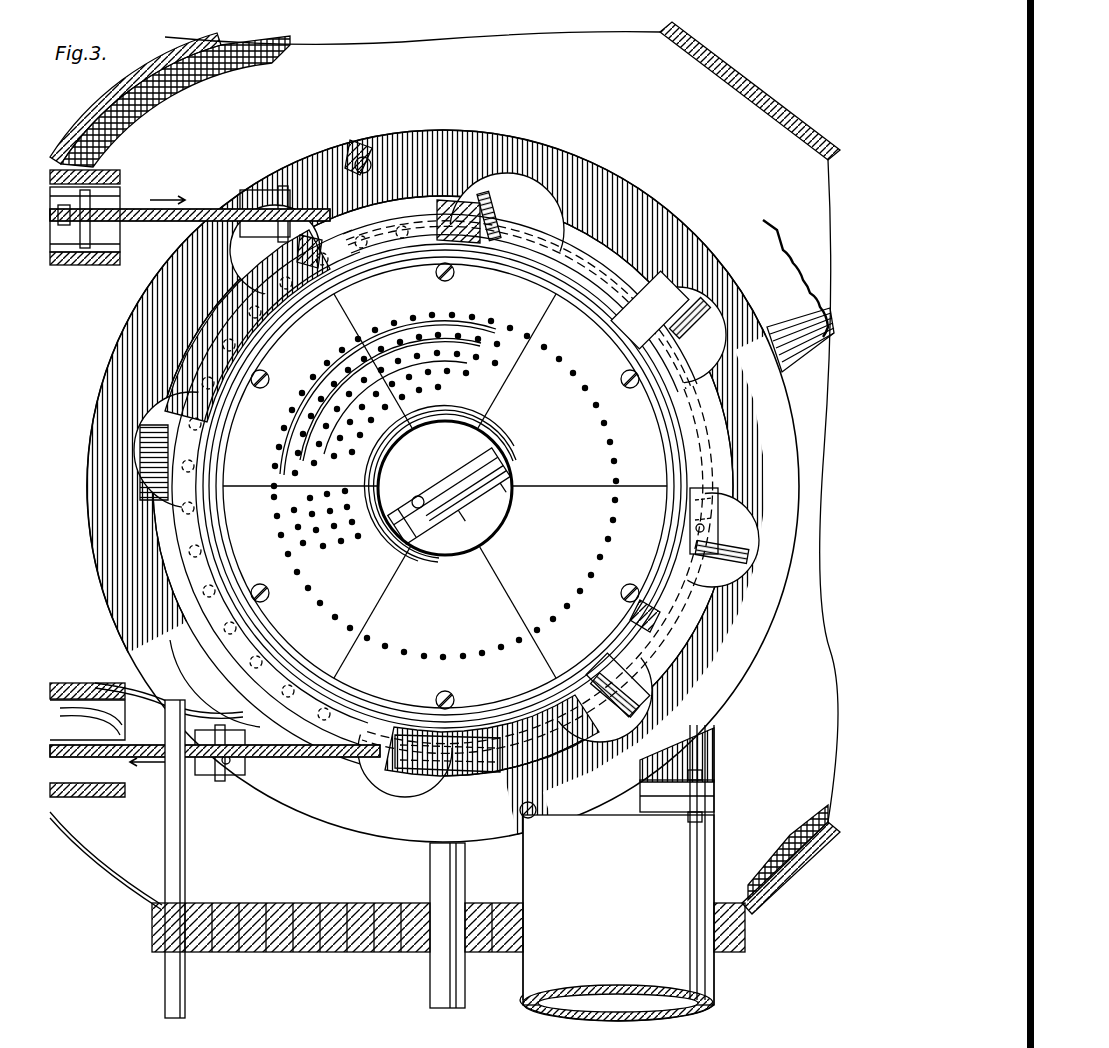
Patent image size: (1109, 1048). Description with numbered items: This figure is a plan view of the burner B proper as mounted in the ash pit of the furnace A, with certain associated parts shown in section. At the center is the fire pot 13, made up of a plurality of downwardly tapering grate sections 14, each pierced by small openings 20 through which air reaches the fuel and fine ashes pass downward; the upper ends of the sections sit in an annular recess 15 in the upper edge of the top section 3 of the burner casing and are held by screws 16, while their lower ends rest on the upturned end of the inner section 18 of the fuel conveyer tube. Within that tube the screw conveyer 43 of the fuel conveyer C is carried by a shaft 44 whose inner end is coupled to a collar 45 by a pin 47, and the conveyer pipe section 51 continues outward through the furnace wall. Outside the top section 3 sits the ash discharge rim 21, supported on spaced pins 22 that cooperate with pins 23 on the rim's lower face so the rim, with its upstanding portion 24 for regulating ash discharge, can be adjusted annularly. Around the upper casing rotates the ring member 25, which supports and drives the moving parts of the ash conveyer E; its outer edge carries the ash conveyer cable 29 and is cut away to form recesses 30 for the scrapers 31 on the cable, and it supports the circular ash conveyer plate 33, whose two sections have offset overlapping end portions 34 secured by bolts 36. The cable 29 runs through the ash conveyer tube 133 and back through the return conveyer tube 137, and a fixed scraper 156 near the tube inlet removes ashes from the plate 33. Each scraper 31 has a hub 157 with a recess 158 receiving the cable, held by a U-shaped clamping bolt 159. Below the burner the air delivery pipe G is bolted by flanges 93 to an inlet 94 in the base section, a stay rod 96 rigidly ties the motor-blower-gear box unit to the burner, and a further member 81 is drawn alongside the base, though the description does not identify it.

The furnace A is at (752, 72).
The burner B is at (657, 195).
The fuel conveyer C is at (745, 226).
The ash conveyer E is at (105, 210).
The air delivery pipe G is at (708, 975).
The top section 3 is at (355, 710).
The fire pot 13 is at (640, 420).
The grate sections 14 is at (445, 486).
The annular recess 15 is at (235, 400).
The screws 16 is at (268, 376).
The inner section of the fuel conveyer tube 18 is at (445, 430).
The openings 20 is at (322, 372).
The ash discharge rim 21 is at (215, 332).
The pins 22 is at (456, 245).
The pins 23 is at (190, 582).
The upstanding portion 24 is at (160, 470).
The ring member 25 is at (598, 256).
The ash conveyer cable 29 is at (210, 200).
The recesses 30 is at (250, 300).
The scrapers 31 is at (86, 200).
The ash conveyer plate 33 is at (110, 545).
The offset overlapping end portion 34 is at (355, 150).
The bolts 36 is at (368, 155).
The screw conveyer 43 is at (505, 470).
The shaft 44 is at (490, 445).
The collar 45 is at (455, 466).
The pin 47 is at (462, 500).
The conveyer pipe section 51 is at (790, 258).
The rod 81 is at (432, 992).
The flanges 93 is at (715, 796).
The inlet 94 is at (705, 748).
The stay rod 96 is at (166, 990).
The ash conveyer tube 133 is at (92, 800).
The return conveyer tube 137 is at (112, 264).
The fixed scraper 156 is at (215, 708).
The hub 157 is at (250, 190).
The recess 158 is at (712, 502).
The U-shaped clamping bolt 159 is at (708, 528).